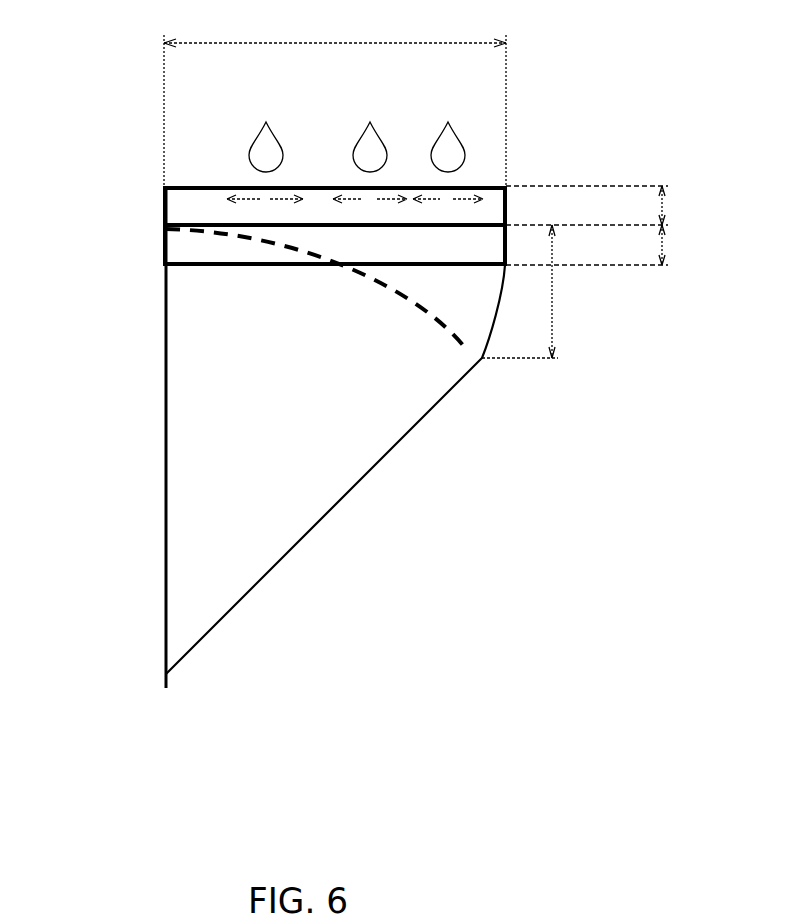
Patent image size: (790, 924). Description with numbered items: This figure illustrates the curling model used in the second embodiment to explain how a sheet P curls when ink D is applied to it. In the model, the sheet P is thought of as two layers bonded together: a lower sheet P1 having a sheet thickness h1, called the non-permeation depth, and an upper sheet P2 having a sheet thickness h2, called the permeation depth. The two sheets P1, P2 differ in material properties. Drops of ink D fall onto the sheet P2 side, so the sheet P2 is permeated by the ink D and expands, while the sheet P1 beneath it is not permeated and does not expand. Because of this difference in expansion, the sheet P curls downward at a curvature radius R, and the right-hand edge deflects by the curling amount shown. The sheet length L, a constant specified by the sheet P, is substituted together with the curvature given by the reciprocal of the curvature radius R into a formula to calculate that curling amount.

The sheet length L is at (335, 95).
The ink D is at (275, 133).
The sheet P is at (87, 180).
The sheet P2 is at (208, 191).
The sheet P1 is at (203, 265).
The sheet thickness h2 (permeation depth) h2 is at (602, 205).
The sheet thickness h1 (non-permeation depth) h1 is at (602, 245).
The curvature radius R is at (335, 438).